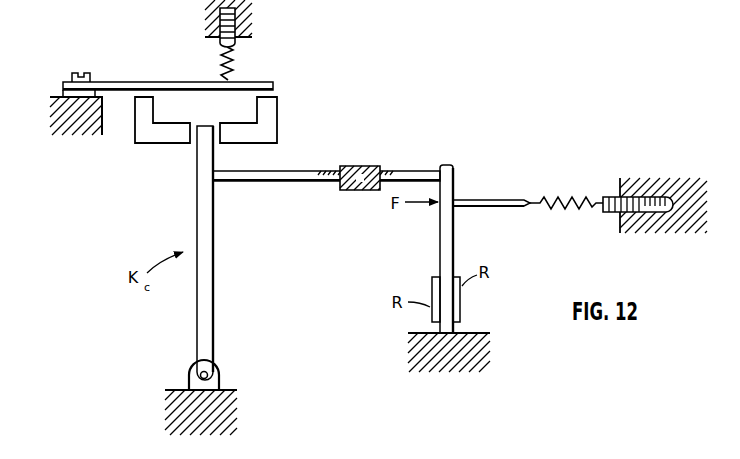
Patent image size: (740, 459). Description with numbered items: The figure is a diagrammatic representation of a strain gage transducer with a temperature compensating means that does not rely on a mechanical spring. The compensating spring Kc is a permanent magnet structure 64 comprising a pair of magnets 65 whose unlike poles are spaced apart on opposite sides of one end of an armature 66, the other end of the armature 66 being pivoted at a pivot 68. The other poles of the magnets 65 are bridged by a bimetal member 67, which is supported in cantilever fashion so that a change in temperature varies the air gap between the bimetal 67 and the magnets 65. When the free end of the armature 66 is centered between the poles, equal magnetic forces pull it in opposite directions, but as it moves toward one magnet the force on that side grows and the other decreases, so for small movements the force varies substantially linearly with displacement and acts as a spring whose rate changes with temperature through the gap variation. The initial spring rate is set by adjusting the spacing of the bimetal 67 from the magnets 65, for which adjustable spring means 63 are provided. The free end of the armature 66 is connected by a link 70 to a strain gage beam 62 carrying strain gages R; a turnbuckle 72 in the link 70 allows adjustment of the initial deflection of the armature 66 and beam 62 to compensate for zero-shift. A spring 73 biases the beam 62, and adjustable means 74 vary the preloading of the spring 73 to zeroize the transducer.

The strain gage beam 62 is at (455, 178).
The adjustable spring means 63 is at (233, 63).
The permanent magnet structure 64 is at (115, 145).
The magnets 65 is at (145, 140).
The armature 66 is at (215, 243).
The bimetal member 67 is at (175, 81).
The pivot 68 is at (218, 374).
The link 70 is at (279, 183).
The adjusting nut 72 is at (357, 167).
The spring 73 is at (558, 213).
The adjustable means 74 is at (643, 177).